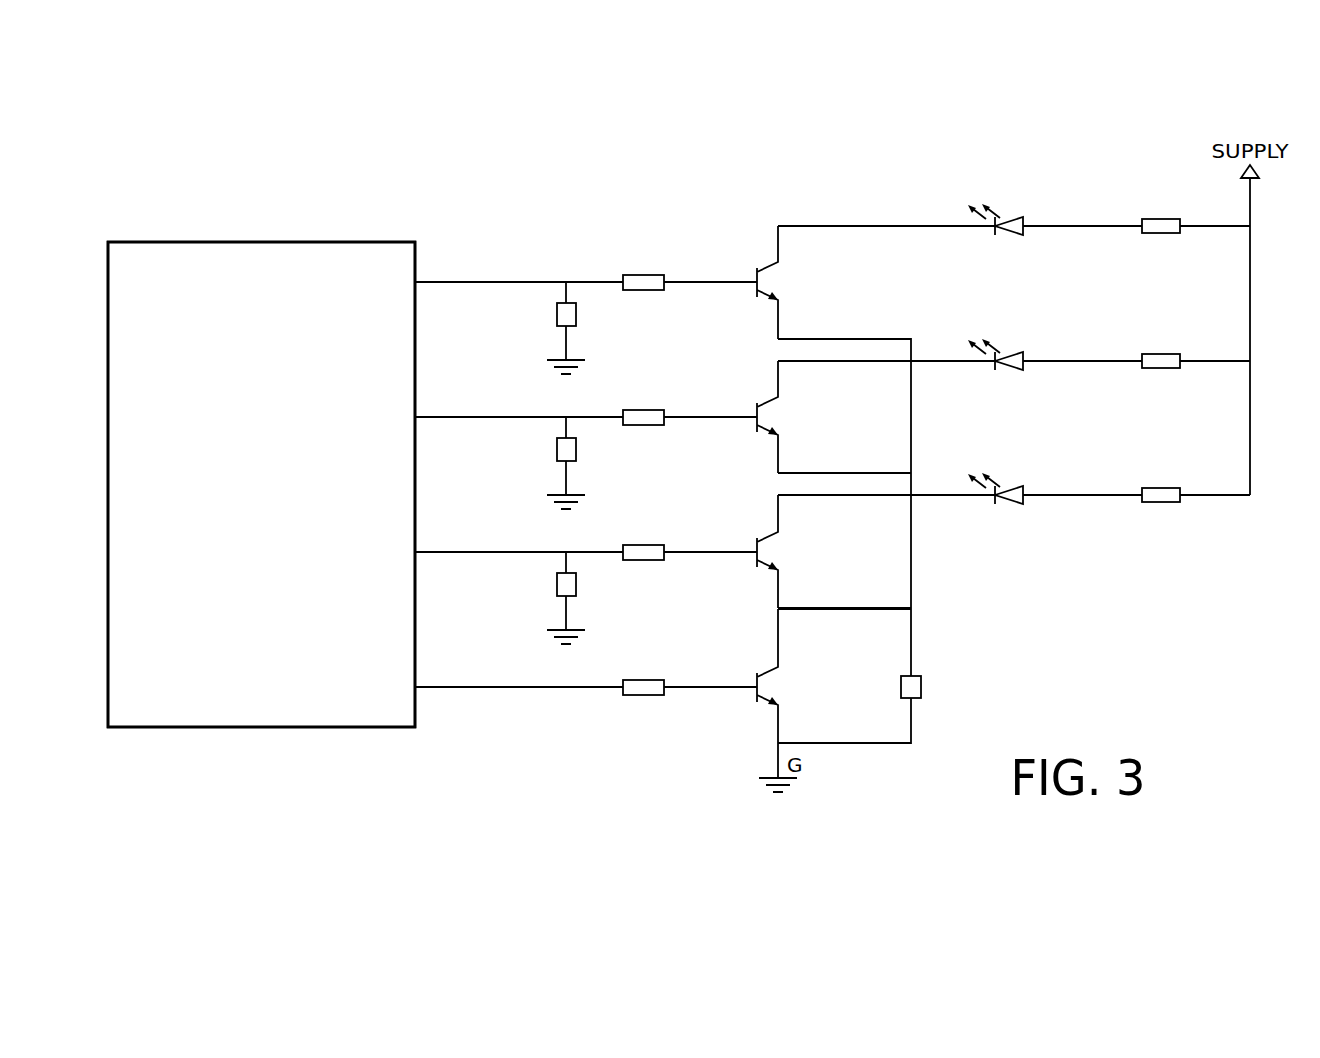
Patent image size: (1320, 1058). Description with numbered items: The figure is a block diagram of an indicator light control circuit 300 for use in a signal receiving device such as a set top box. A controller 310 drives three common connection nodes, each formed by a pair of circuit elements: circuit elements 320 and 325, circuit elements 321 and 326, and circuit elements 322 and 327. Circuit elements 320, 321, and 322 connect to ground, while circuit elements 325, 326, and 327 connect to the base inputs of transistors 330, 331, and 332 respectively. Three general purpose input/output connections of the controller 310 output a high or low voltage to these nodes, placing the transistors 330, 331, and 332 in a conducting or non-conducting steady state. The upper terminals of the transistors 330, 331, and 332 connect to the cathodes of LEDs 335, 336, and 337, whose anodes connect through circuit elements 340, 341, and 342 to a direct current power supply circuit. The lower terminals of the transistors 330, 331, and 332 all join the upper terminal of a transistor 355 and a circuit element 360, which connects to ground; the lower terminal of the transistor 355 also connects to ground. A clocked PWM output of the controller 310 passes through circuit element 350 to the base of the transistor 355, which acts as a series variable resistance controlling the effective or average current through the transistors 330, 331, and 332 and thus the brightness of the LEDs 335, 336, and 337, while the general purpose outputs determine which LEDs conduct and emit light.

The indicator light control circuit 300 is at (193, 749).
The controller 310 is at (262, 242).
The circuit element 320 is at (557, 315).
The circuit element 321 is at (557, 450).
The circuit element 322 is at (557, 585).
The circuit element 325 is at (643, 275).
The circuit element 326 is at (643, 410).
The circuit element 327 is at (643, 545).
The transistor 330 is at (772, 267).
The transistor 331 is at (772, 402).
The transistor 332 is at (772, 537).
The LED 335 is at (1023, 219).
The LED 336 is at (1023, 354).
The LED 337 is at (1023, 489).
The circuit element 340 is at (1162, 219).
The circuit element 341 is at (1162, 354).
The circuit element 342 is at (1162, 488).
The circuit element 350 is at (643, 680).
The transistor 355 is at (772, 672).
The circuit element 360 is at (921, 687).